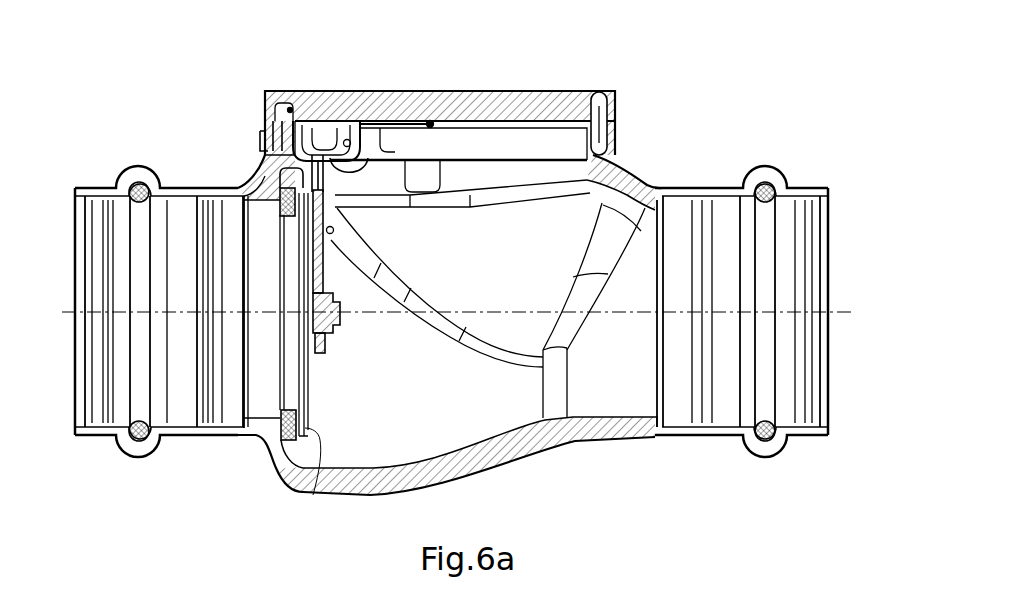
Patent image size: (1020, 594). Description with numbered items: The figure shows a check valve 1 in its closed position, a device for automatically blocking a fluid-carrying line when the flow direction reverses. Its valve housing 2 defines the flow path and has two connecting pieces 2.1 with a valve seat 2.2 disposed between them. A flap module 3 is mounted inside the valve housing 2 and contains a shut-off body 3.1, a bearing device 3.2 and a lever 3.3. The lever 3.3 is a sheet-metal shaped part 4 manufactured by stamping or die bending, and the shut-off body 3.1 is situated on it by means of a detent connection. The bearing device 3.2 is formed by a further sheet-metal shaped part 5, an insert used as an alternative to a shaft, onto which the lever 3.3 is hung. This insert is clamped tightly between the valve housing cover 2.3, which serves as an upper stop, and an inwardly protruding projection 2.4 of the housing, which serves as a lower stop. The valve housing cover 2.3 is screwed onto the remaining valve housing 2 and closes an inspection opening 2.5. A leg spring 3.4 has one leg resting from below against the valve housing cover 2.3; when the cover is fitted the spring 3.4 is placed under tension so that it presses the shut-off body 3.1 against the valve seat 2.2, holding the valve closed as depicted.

The check valve 1 is at (692, 84).
The valve housing 2 is at (258, 192).
The connecting pieces 2.1 is at (114, 186).
The valve seat 2.2 is at (313, 495).
The valve housing cover 2.3 is at (523, 107).
The inwardly protruding projection 2.4 is at (574, 189).
The inspection opening 2.5 is at (550, 143).
The flap module 3 is at (367, 222).
The shut-off body 3.1 is at (311, 401).
The bearing device 3.2 is at (331, 170).
The lever 3.3 is at (333, 346).
The leg spring 3.4 is at (388, 122).
The sheet-metal shaped part 4 is at (332, 268).
The sheet-metal shaped part 5 is at (461, 108).